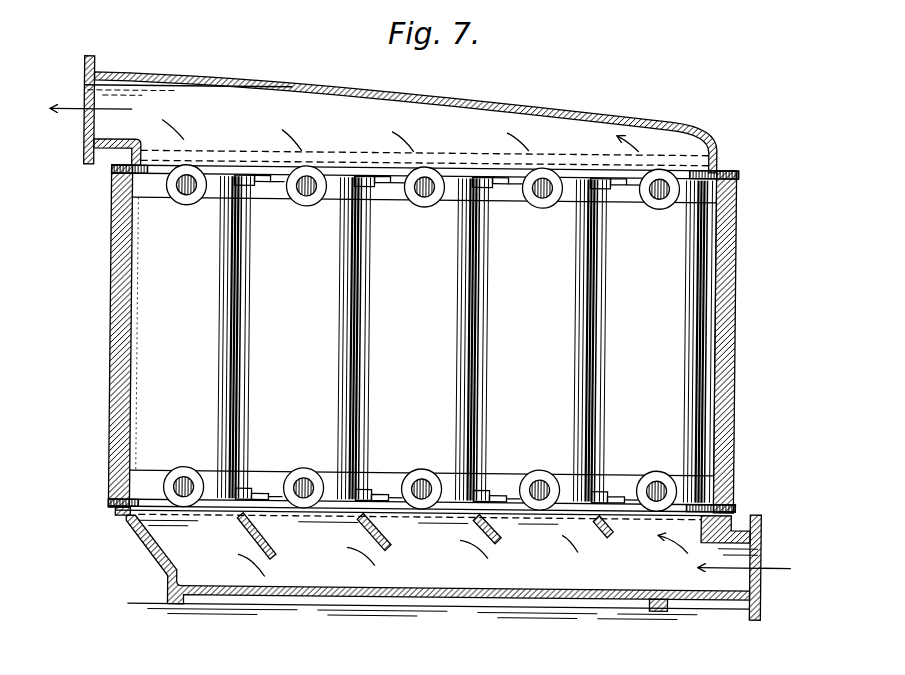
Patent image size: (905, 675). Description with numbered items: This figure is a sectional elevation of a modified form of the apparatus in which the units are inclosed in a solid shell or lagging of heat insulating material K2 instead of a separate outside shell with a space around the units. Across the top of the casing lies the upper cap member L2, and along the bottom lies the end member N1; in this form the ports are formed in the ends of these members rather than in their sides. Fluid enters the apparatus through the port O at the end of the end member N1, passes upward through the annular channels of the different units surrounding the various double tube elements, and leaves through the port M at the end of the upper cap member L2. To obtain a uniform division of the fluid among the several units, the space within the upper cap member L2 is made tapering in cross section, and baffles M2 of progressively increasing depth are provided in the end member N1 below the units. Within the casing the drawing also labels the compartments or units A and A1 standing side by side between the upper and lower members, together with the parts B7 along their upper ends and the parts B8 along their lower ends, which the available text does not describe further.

The upper cap member L2 is at (437, 101).
The port M is at (90, 132).
The upper tube boss B7 is at (661, 214).
The end compartment A is at (441, 339).
The intermediate compartment A1 is at (462, 339).
The shell or lagging of heat insulating material K2 is at (724, 356).
The lower tube boss B8 is at (661, 478).
The baffle M2 is at (628, 542).
The end member N1 is at (473, 588).
The port O is at (748, 578).